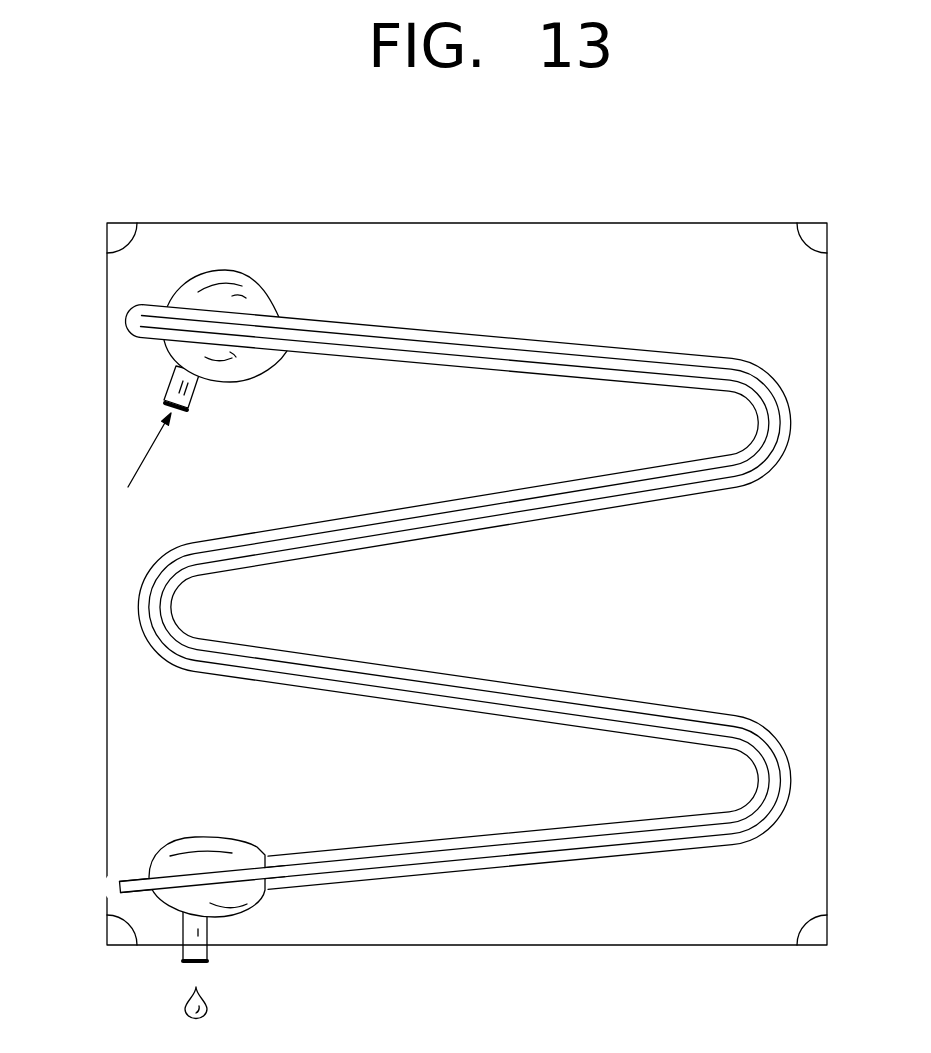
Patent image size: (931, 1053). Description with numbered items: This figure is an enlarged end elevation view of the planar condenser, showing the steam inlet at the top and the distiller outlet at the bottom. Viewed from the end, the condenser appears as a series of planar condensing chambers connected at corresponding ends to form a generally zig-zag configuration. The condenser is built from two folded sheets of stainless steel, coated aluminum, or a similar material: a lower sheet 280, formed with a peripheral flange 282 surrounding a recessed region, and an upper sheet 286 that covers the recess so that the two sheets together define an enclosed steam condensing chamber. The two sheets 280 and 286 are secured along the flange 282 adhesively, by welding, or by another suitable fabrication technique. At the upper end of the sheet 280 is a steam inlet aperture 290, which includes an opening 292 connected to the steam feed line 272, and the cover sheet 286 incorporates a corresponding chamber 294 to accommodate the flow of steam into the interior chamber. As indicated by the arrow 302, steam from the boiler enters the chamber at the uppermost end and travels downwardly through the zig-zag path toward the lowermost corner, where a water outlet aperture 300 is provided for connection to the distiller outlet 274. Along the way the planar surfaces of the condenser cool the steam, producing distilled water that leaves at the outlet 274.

The steam feed line 272 is at (172, 379).
The distiller outlet 274 is at (182, 952).
The sheet 280 is at (455, 591).
The peripheral flange 282 is at (610, 370).
The upper sheet 286 is at (458, 342).
The steam inlet aperture 290 is at (269, 347).
The opening 292 is at (238, 378).
The chamber 294 is at (263, 289).
The water outlet aperture 300 is at (222, 900).
The arrow 302 is at (143, 461).